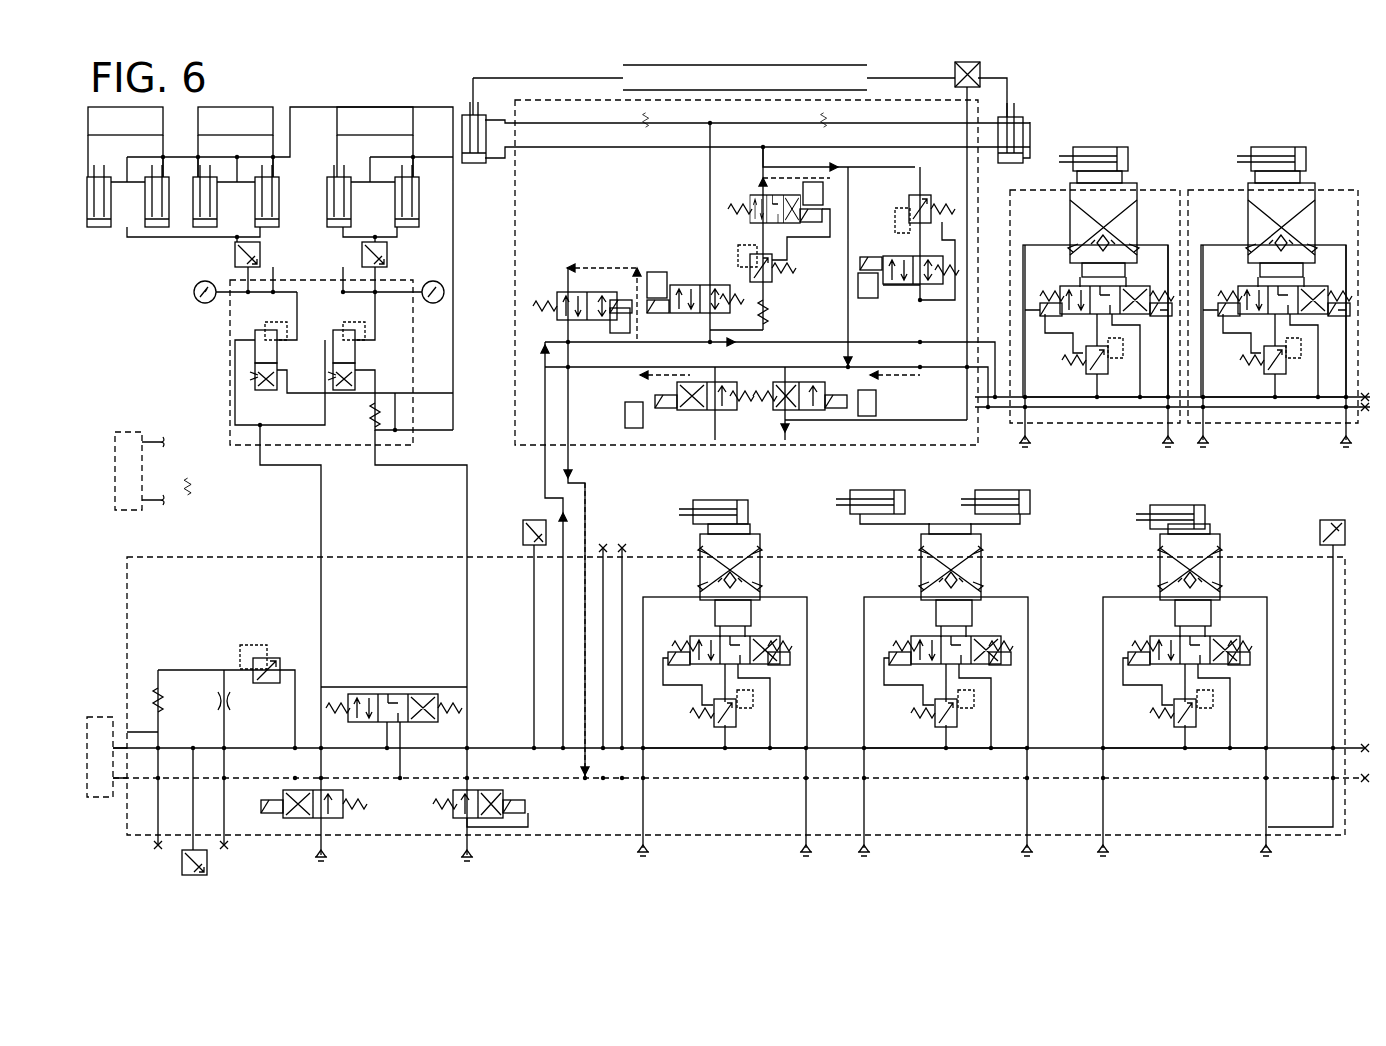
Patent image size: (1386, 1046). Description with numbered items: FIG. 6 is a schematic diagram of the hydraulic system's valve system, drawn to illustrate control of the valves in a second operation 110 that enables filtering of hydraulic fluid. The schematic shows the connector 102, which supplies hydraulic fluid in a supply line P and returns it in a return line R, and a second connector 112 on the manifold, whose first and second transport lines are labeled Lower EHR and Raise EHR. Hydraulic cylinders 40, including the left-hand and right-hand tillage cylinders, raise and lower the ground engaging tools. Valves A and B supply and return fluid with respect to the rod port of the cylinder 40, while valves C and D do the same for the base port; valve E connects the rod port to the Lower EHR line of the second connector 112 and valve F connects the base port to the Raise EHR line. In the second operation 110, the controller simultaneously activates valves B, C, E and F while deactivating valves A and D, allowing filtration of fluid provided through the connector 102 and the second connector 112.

The second operation 110 is at (318, 75).
The hydraulic cylinder 40 is at (468, 112).
The second connector 112 is at (124, 432).
The connector 102 is at (102, 717).